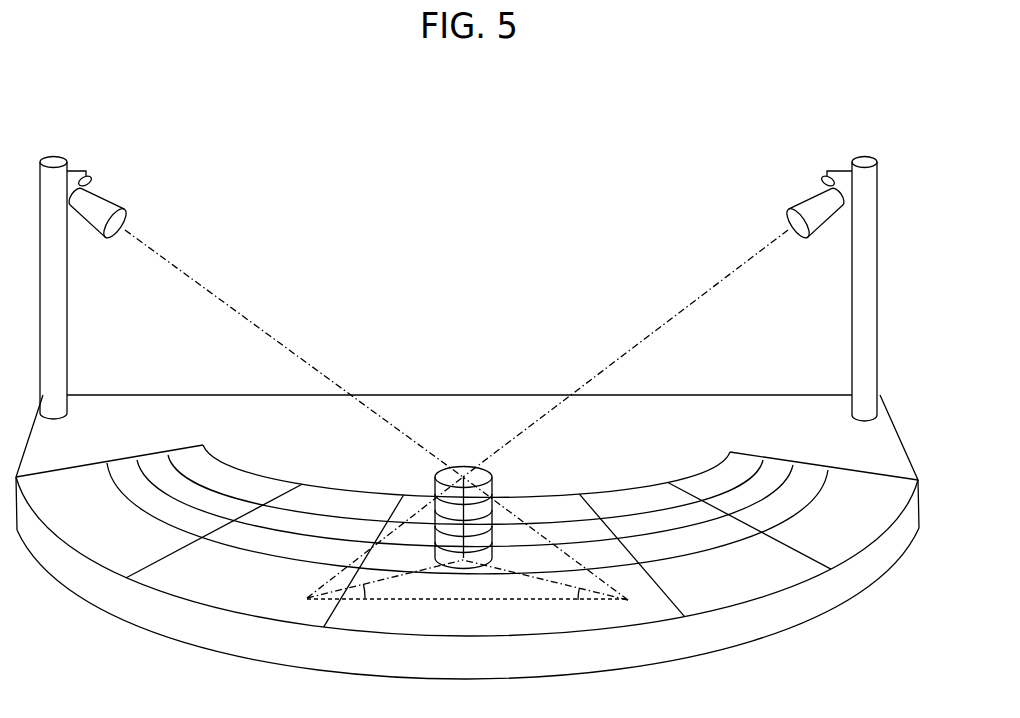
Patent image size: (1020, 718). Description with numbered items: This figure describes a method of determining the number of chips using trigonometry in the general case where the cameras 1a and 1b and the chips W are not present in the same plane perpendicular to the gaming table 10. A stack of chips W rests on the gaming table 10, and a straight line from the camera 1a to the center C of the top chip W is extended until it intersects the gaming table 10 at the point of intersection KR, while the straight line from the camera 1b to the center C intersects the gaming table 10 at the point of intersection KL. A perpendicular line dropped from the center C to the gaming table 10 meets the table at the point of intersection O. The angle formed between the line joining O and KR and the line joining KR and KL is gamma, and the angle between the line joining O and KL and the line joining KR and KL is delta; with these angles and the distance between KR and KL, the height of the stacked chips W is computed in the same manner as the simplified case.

The gaming table 10 is at (893, 438).
The camera 1a is at (803, 192).
The camera 1b is at (110, 192).
The chips W is at (495, 490).
The center of the top chip C is at (467, 517).
The point of intersection O is at (467, 580).
The point of intersection KR is at (447, 604).
The point of intersection KL is at (614, 607).